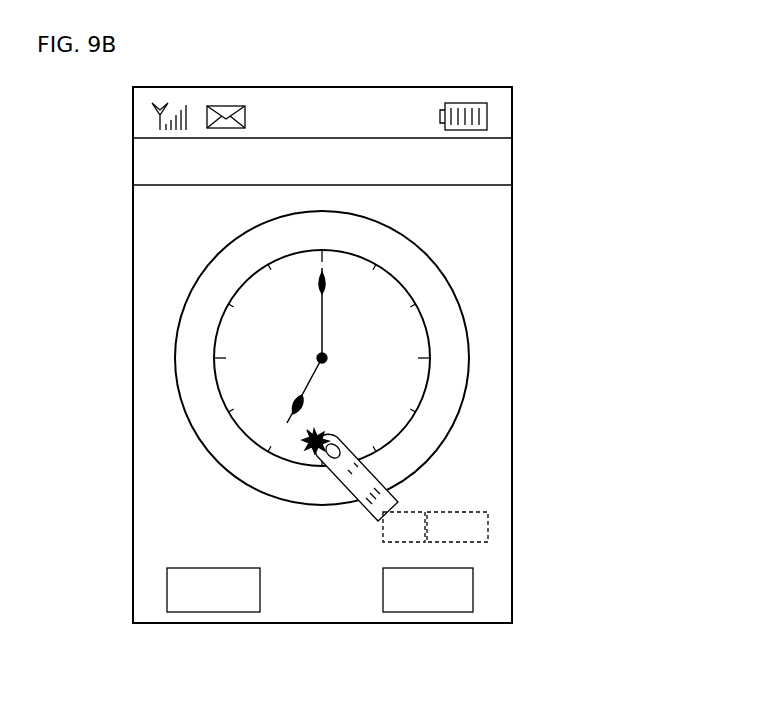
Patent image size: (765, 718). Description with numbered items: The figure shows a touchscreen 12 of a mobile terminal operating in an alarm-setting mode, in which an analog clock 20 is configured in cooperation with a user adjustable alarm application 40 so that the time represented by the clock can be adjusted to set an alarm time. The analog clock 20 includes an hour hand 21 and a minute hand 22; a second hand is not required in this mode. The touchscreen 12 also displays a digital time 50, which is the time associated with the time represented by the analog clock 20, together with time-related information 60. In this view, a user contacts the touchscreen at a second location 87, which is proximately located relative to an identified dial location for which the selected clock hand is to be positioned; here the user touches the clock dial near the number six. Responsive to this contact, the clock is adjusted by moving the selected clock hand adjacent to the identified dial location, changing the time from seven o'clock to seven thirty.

The touchscreen 12 is at (512, 233).
The alarm application 40 is at (492, 158).
The analog clock 20 is at (460, 413).
The minute hand 22 is at (322, 318).
The hour hand 21 is at (304, 389).
The time-related information 60 is at (365, 522).
The second location 87 is at (305, 441).
The digital time 50 is at (488, 525).